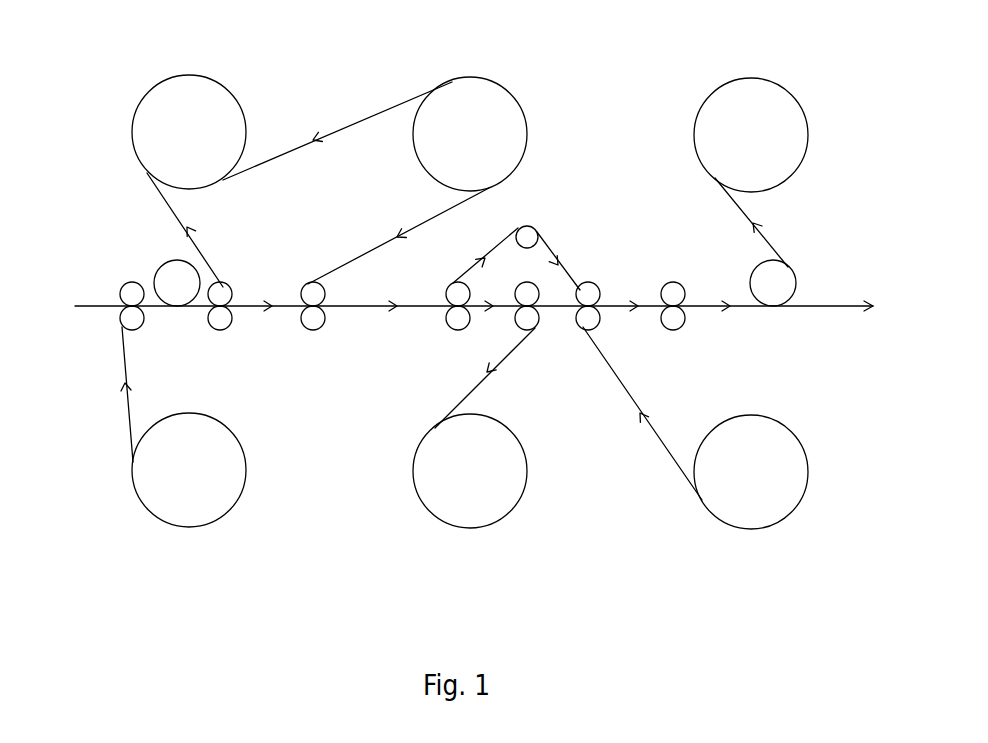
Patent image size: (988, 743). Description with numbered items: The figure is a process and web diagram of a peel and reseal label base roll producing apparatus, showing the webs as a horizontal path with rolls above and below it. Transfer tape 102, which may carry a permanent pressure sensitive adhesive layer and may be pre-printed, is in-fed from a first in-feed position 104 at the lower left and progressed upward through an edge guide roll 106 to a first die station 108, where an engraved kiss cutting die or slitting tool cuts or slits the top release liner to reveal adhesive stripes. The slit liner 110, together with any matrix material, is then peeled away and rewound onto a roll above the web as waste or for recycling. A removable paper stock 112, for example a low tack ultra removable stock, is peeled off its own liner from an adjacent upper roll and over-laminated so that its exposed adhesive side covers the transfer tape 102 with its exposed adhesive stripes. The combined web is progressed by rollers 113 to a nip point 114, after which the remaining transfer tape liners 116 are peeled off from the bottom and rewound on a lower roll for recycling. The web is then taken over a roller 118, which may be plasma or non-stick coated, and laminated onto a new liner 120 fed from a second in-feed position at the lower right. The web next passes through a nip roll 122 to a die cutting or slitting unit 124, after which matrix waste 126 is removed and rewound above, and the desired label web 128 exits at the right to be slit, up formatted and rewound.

The transfer tape 102 is at (127, 403).
The first in-feed position 104 is at (185, 492).
The edge guide roll 106 is at (132, 293).
The first die station 108 is at (177, 280).
The liner 110 is at (207, 100).
The removable paper stock 112 is at (462, 98).
The rollers 113 is at (457, 318).
The nip point 114 is at (518, 320).
The transfer tape liners 116 is at (490, 502).
The roller 118 is at (527, 235).
The new liner 120 is at (760, 495).
The nip roll 122 is at (675, 293).
The die cutting or slitting unit 124 is at (772, 293).
The matrix waste 126 is at (749, 112).
The label web 128 is at (847, 305).